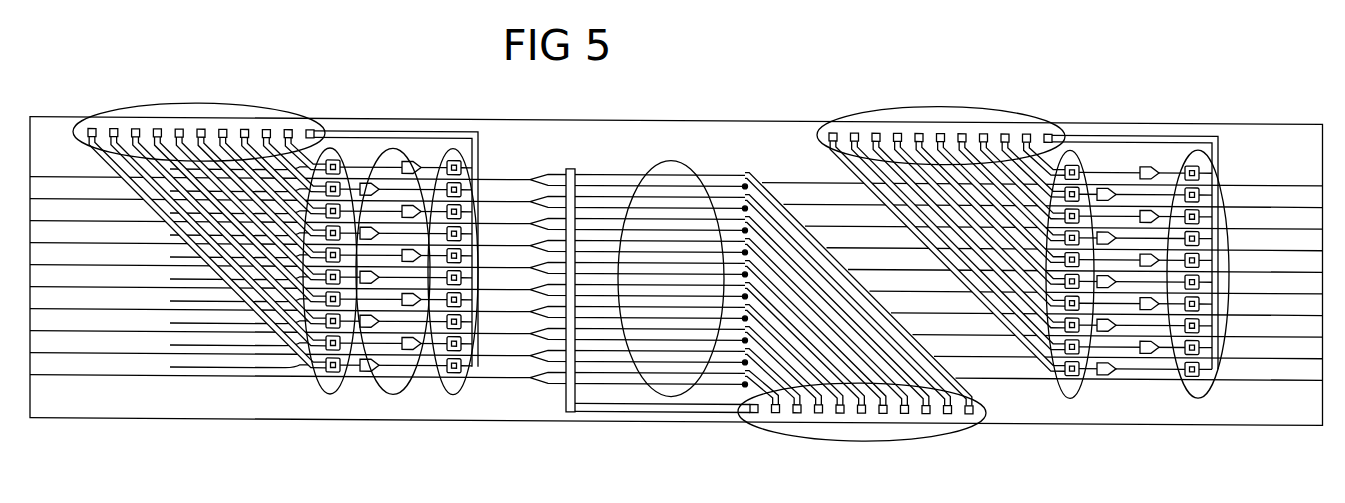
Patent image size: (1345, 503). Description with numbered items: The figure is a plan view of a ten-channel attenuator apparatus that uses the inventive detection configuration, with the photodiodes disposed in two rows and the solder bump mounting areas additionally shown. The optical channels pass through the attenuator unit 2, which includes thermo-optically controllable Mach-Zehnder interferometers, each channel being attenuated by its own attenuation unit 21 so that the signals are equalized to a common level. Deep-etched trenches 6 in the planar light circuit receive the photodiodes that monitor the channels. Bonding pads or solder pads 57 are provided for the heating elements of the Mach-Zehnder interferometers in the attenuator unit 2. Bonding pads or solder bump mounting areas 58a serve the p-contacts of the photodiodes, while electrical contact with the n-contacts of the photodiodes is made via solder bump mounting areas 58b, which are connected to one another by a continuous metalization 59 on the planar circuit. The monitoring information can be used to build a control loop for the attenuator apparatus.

The attenuator unit 2 is at (681, 156).
The trenches 6 is at (410, 145).
The attenuation unit 21 is at (669, 397).
The solder pads 57 is at (818, 434).
The solder bump mounting areas 58a is at (331, 392).
The solder bump mounting areas 58b is at (451, 391).
The continuous metalization 59 is at (480, 147).